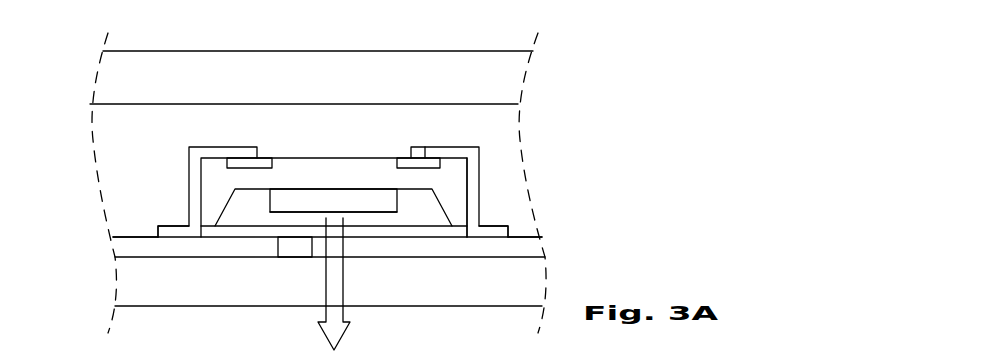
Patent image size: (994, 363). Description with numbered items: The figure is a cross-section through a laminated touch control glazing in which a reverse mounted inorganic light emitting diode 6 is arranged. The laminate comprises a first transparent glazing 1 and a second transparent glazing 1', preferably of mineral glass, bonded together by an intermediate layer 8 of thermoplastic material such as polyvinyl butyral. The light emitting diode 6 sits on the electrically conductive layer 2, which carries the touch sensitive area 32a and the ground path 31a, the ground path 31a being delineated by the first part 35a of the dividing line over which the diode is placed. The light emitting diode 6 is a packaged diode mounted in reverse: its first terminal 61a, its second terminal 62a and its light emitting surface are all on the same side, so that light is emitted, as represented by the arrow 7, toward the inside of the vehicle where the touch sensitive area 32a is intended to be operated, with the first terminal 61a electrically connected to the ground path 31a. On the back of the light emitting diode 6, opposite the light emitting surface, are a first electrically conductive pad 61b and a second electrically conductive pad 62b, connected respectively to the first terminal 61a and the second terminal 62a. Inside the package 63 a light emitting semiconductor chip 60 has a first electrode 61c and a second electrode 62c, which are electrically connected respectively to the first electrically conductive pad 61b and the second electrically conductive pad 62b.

The first transparent glazing 1 is at (299, 300).
The second transparent glazing 1' is at (295, 59).
The electrically conductive layer 2 is at (125, 247).
The light emitting diode 6 is at (210, 130).
The arrow 7 is at (343, 280).
The intermediate layer 8 is at (125, 138).
The ground path 31a is at (527, 250).
The touch sensitive area 32a is at (150, 247).
The first part of the dividing line 35a is at (293, 250).
The light emitting semiconductor chip 60 is at (320, 198).
The first terminal 61a is at (477, 233).
The first electrically conductive pad 61b is at (423, 163).
The first electrode 61c is at (367, 185).
The second terminal 62a is at (177, 232).
The second electrically conductive pad 62b is at (263, 163).
The second electrode 62c is at (382, 212).
The package 63 is at (452, 183).